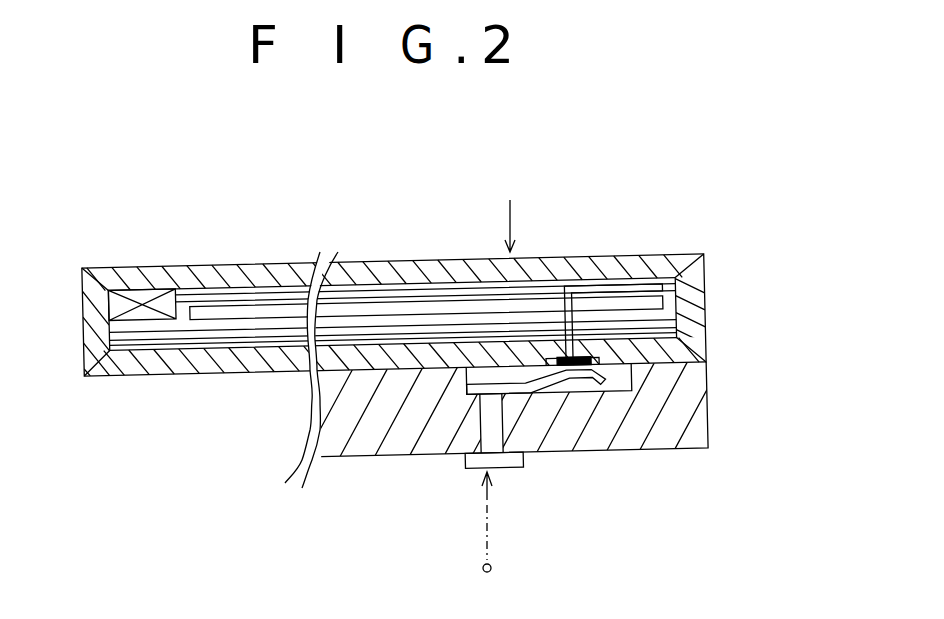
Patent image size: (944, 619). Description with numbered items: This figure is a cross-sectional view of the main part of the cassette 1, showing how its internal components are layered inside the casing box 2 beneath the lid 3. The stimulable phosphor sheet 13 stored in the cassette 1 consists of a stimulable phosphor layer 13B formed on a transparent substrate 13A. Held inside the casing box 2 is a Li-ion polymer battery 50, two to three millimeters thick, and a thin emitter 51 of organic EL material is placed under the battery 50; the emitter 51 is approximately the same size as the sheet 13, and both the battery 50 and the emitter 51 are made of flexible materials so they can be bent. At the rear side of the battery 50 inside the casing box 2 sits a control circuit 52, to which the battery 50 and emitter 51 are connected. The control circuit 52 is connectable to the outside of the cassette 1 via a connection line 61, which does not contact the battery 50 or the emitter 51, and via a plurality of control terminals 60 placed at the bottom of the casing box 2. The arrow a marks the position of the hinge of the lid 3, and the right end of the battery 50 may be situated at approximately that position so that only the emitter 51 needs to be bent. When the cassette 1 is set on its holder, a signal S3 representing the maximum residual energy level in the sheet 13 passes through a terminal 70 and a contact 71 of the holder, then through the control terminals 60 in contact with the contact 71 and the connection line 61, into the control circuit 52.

The cassette 1 is at (422, 125).
The casing box 2 is at (183, 366).
The lid 3 is at (612, 257).
The stimulable phosphor sheet 13 is at (479, 333).
The transparent substrate 13A is at (678, 322).
The stimulable phosphor layer 13B is at (680, 340).
The Li-ion polymer battery 50 is at (634, 300).
The emitter 51 is at (700, 280).
The control circuit 52 is at (149, 266).
The control terminals 60 is at (708, 380).
The connection line 61 is at (411, 261).
The terminal 70 is at (513, 472).
The contact 71 is at (596, 384).
The arrow a is at (510, 212).
The signal S3 is at (511, 527).